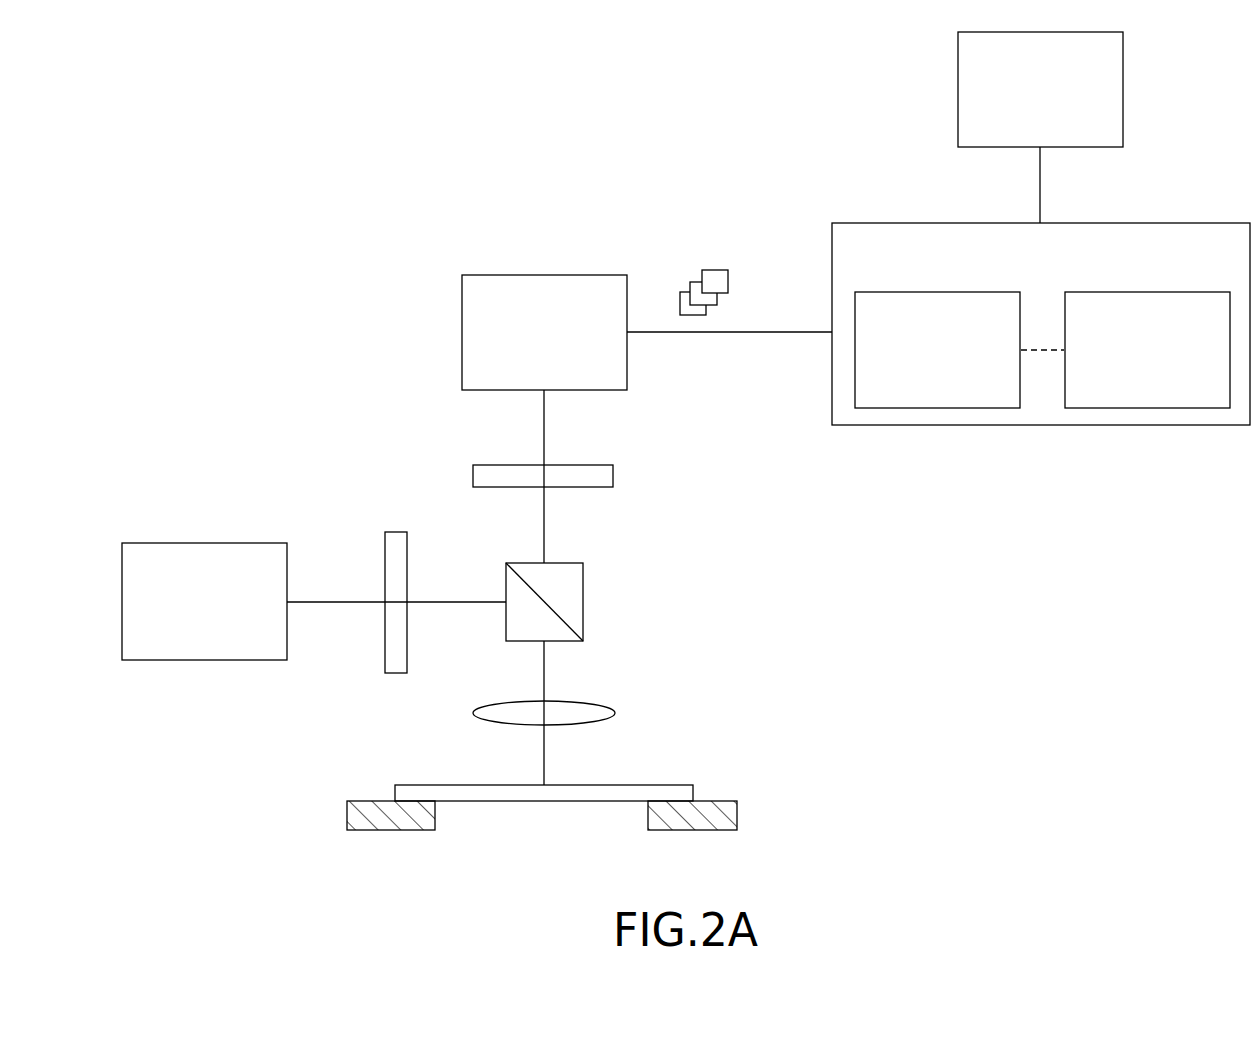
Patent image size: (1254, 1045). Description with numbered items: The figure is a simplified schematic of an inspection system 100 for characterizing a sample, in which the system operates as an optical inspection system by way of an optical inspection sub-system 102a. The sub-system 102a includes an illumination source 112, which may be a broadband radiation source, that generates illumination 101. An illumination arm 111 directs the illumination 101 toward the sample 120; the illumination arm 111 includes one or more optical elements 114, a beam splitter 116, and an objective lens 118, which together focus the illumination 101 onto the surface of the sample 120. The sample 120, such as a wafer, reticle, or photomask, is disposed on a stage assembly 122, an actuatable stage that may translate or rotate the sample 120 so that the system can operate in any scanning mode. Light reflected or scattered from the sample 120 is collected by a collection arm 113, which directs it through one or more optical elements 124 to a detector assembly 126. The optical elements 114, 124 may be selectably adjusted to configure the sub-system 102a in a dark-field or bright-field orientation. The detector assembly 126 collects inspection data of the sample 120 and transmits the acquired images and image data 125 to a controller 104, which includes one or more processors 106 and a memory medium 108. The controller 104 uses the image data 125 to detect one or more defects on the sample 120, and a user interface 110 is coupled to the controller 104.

The inspection system 100 is at (272, 158).
The illumination 101 is at (338, 603).
The optical inspection sub-system 102a is at (217, 335).
The controller 104 is at (1041, 324).
The processors 106 is at (937, 350).
The memory medium 108 is at (1147, 350).
The user interface 110 is at (1040, 89).
The illumination arm 111 is at (333, 500).
The illumination source 112 is at (204, 601).
The collection arm 113 is at (703, 633).
The optical elements 114 is at (395, 675).
The beam splitter 116 is at (583, 602).
The objective lens 118 is at (600, 703).
The sample 120 is at (657, 785).
The stage assembly 122 is at (737, 808).
The optical elements 124 is at (613, 478).
The image data 125 is at (665, 279).
The detector assembly 126 is at (647, 332).